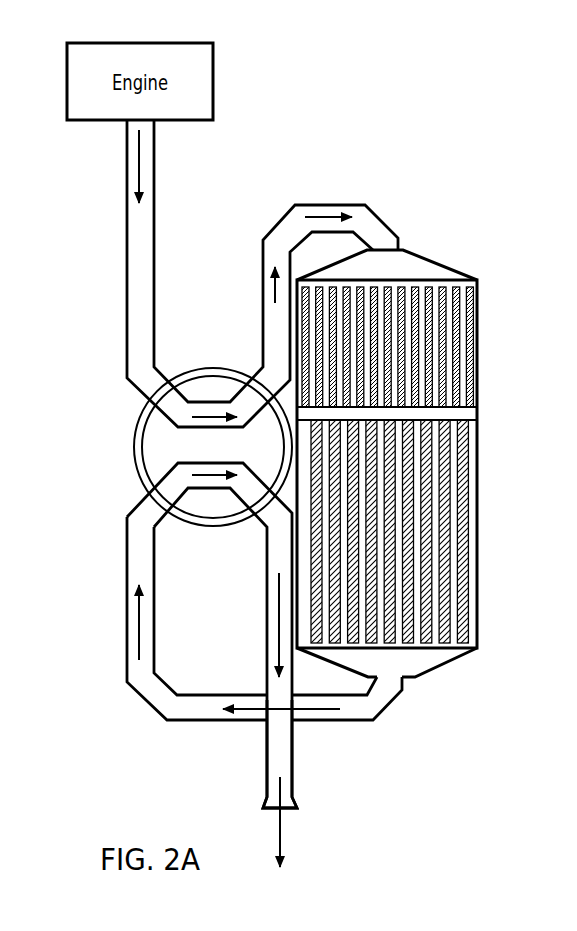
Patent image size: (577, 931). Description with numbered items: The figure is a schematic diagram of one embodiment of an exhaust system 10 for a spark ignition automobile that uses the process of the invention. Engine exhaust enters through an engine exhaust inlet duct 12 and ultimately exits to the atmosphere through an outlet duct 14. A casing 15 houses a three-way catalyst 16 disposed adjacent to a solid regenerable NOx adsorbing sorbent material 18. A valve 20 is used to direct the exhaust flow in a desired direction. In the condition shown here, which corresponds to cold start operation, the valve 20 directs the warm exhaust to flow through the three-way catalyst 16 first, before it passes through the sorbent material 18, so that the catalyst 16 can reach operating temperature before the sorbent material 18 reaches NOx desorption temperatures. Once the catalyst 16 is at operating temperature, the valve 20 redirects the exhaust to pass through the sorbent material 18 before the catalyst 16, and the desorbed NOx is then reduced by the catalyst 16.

The exhaust system 10 is at (226, 557).
The engine exhaust inlet duct 12 is at (143, 218).
The outlet duct 14 is at (282, 765).
The casing 15 is at (430, 439).
The three-way catalyst 16 is at (440, 347).
The solid regenerable NOx adsorbing sorbent material 18 is at (443, 558).
The valve 20 is at (193, 380).